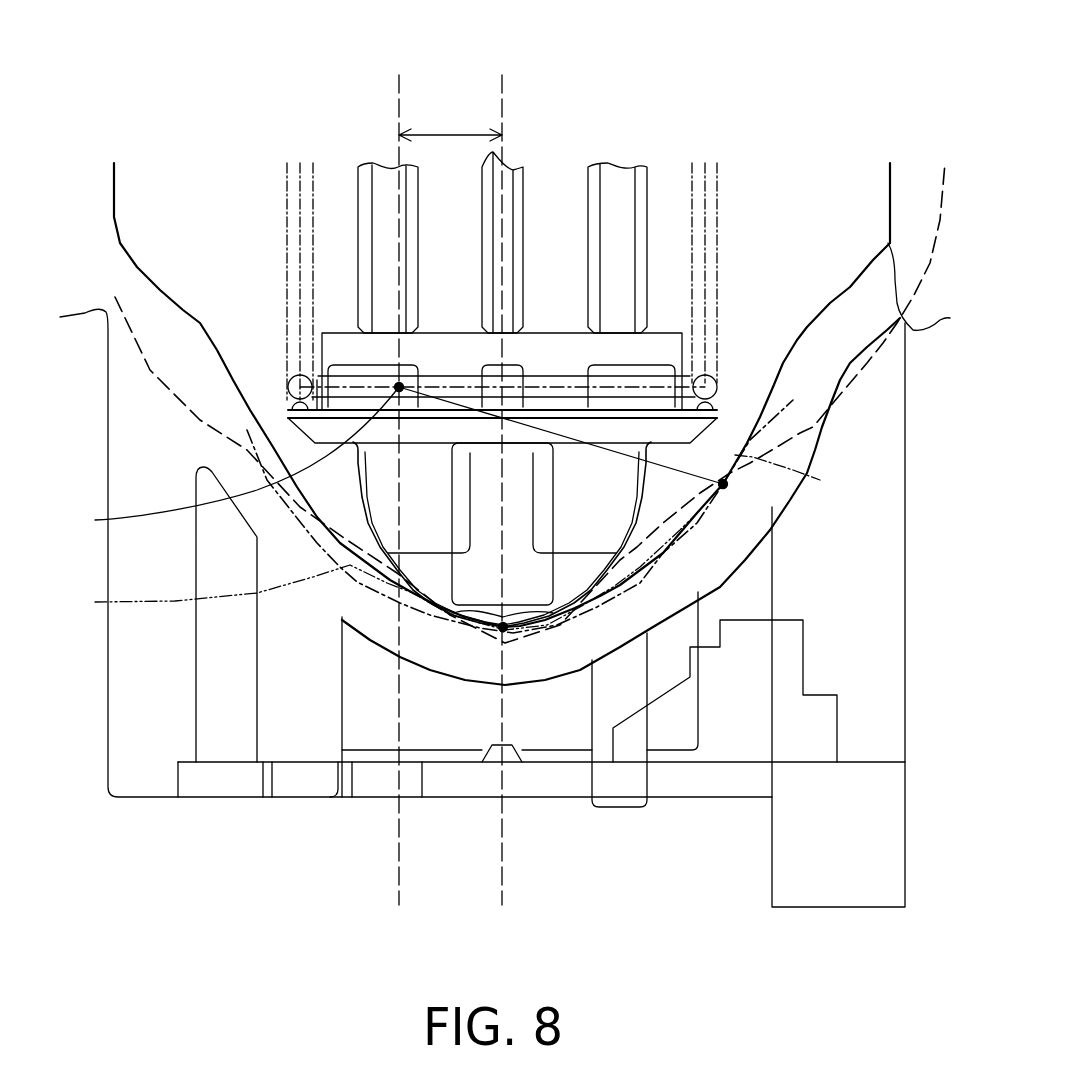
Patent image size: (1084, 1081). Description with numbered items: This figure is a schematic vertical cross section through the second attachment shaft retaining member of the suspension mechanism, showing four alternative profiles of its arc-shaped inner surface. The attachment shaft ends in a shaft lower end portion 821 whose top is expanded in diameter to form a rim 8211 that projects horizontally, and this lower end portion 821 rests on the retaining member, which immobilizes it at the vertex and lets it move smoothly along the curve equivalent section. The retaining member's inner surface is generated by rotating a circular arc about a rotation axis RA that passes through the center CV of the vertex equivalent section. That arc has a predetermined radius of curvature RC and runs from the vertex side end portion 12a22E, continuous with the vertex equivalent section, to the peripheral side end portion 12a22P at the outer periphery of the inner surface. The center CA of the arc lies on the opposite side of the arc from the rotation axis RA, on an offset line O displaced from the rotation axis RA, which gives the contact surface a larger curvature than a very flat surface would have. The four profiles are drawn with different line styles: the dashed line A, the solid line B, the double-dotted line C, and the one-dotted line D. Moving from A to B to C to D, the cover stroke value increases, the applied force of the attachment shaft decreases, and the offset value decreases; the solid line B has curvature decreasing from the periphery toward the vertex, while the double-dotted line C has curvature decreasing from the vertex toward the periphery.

The rim 8211 is at (668, 470).
The shaft lower end portion 821 is at (360, 502).
The offset line O is at (399, 470).
The rotation axis RA is at (502, 470).
The dashed line A is at (808, 418).
The solid line B is at (807, 327).
The double-dotted line C is at (383, 570).
The one-dotted line D is at (347, 578).
The center of the circular arc CA is at (226, 462).
The radius of curvature RC is at (820, 480).
The center of the vertex equivalent section CV is at (503, 627).
The vertex side end portion 12a22E is at (399, 387).
The peripheral side end portion 12a22P is at (723, 484).